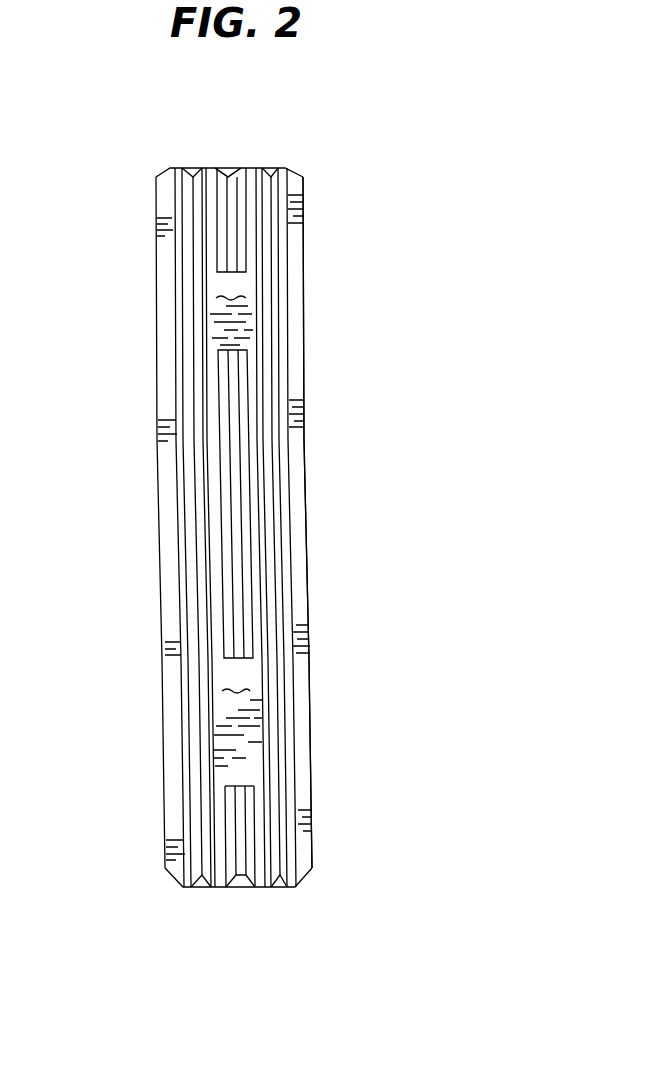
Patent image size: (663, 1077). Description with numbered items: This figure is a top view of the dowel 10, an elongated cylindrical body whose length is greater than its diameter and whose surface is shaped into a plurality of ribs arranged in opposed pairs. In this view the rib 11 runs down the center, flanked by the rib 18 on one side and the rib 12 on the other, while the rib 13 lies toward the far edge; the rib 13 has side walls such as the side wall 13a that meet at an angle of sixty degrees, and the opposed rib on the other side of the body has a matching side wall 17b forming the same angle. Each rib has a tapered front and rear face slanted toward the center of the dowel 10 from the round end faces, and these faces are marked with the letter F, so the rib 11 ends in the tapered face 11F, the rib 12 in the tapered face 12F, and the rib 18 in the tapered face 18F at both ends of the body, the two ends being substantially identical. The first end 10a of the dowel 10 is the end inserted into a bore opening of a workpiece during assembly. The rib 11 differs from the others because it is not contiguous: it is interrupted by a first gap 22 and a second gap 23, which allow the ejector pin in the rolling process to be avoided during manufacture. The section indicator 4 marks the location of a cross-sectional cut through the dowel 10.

The dowel 10 is at (322, 248).
The first end 10a is at (212, 168).
The rib 11 is at (226, 236).
The tapered face of rib 11F is at (229, 176).
The rib 12 is at (272, 170).
The tapered face of rib 12F is at (265, 170).
The rib 13 is at (300, 607).
The side wall of rib 13a is at (318, 740).
The side wall of rib 17b is at (167, 372).
The rib 18 is at (183, 170).
The tapered face of rib 18F is at (188, 172).
The first gap 22 is at (231, 256).
The second gap 23 is at (238, 618).
The section line 4- 4 is at (234, 505).